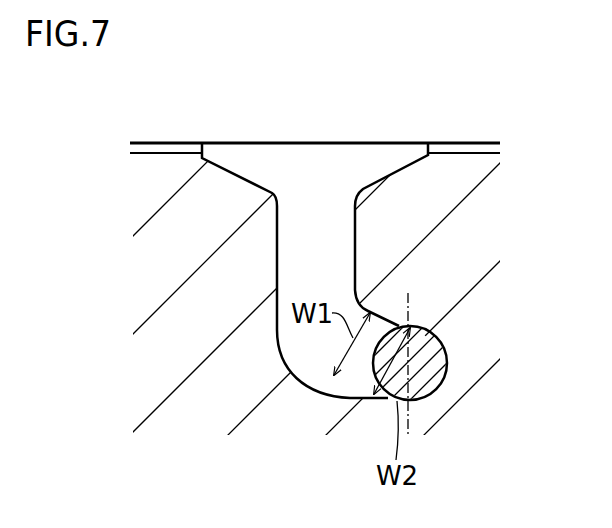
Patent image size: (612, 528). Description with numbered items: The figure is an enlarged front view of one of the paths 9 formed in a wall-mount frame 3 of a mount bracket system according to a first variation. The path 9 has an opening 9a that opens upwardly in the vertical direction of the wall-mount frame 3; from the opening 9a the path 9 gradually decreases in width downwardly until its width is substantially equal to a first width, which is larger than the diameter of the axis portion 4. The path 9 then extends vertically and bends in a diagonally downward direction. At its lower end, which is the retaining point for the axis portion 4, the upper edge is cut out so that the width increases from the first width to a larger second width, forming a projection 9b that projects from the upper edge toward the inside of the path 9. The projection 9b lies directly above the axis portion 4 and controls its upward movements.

The wall-mount frame 3 is at (163, 142).
The path 9 is at (279, 259).
The opening 9a is at (213, 152).
The projection 9b is at (403, 322).
The axis portion 4 is at (437, 384).